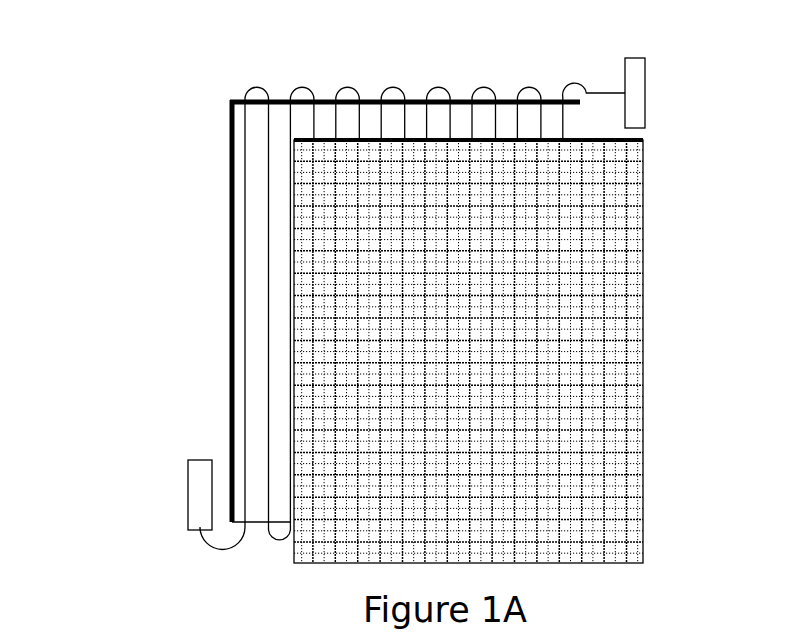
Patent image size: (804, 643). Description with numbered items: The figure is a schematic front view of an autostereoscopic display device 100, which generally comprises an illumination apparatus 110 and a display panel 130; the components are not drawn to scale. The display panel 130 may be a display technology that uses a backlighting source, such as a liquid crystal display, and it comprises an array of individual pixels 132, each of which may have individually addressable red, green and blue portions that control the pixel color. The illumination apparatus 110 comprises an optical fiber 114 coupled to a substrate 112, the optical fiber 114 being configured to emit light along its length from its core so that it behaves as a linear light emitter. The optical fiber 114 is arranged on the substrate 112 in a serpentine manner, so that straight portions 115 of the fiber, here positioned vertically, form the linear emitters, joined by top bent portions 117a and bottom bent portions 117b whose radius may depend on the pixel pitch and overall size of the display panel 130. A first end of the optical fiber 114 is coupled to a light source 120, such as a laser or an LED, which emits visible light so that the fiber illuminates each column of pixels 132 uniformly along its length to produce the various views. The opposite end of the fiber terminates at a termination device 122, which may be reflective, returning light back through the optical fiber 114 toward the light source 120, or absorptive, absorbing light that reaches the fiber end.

The autostereoscopic display device 100 is at (99, 80).
The illumination apparatus 110 is at (222, 102).
The substrate 112 is at (238, 173).
The optical fiber 114 is at (224, 245).
The straight portions 115 is at (247, 372).
The top bent portions 117a is at (256, 87).
The bottom bent portions 117b is at (279, 543).
The light source 120 is at (188, 465).
The termination device 122 is at (637, 58).
The display panel 130 is at (652, 216).
The pixels 132 is at (641, 280).